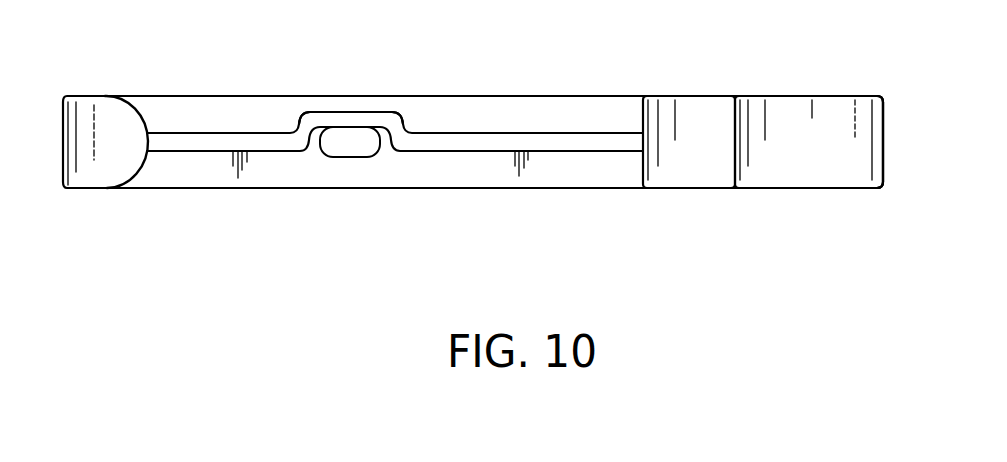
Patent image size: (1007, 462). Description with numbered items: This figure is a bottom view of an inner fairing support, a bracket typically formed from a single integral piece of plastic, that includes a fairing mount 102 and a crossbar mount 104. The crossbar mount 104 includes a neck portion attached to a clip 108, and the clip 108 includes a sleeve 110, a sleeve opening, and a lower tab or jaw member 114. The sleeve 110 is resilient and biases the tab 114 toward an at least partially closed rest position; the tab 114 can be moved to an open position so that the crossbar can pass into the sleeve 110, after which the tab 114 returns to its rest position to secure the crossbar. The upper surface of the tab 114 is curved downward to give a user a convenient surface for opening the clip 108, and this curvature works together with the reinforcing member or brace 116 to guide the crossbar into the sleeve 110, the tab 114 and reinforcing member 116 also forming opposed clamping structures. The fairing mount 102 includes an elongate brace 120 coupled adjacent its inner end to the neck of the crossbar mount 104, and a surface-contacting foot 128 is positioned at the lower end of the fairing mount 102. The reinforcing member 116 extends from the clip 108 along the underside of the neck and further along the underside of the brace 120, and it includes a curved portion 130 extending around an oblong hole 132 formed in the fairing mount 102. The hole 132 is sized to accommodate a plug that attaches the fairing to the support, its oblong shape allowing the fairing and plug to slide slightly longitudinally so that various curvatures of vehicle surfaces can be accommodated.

The fairing mount 102 is at (212, 205).
The crossbar mount 104 is at (767, 188).
The clip 108 is at (837, 167).
The sleeve 110 is at (875, 128).
The tab 114 is at (688, 110).
The reinforcing member 116 is at (492, 133).
The brace 120 is at (190, 115).
The foot 128 is at (85, 113).
The curved portion 130 is at (330, 110).
The hole 132 is at (347, 150).